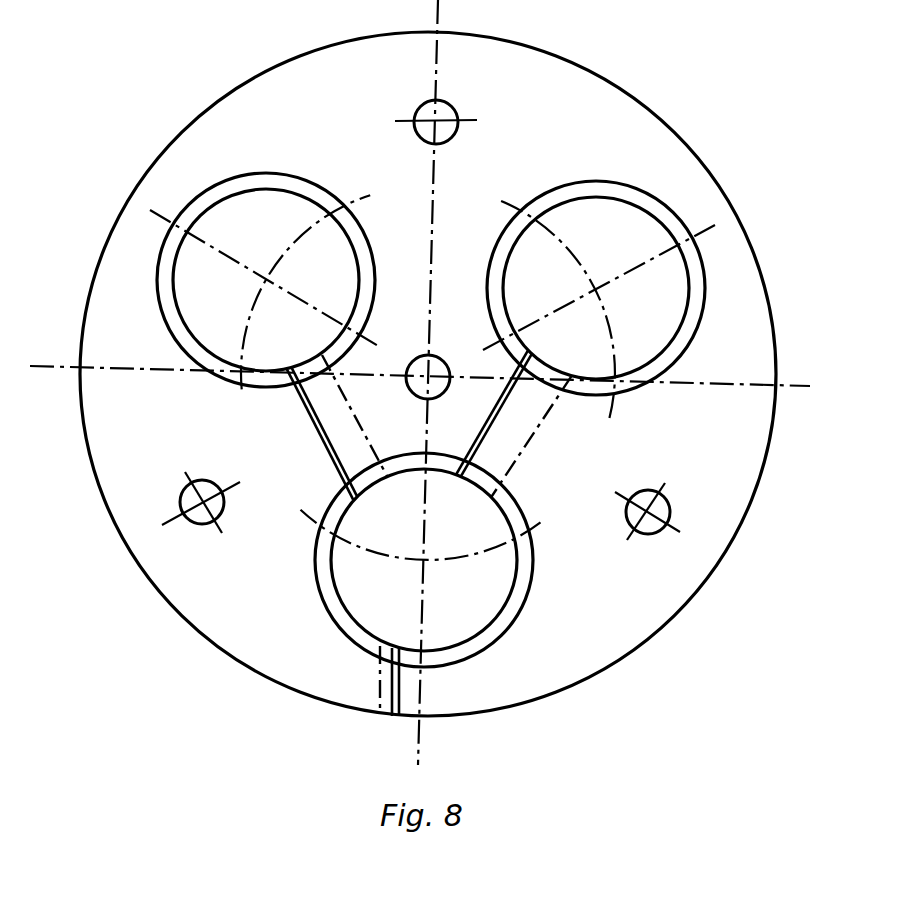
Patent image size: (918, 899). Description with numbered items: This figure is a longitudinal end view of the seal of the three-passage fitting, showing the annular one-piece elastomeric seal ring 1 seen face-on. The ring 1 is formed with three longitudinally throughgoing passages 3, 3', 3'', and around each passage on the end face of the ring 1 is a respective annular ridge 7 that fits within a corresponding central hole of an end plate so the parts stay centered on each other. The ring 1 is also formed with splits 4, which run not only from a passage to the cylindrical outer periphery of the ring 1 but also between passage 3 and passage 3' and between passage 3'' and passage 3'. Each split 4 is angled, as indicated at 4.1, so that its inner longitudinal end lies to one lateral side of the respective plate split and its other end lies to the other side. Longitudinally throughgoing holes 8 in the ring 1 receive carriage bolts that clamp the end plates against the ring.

The seal ring 1 is at (768, 284).
The passage 3 is at (266, 280).
The passage 3' is at (424, 560).
The passage 3'' is at (596, 288).
The split 4 is at (310, 423).
The angled portion of split 4.1 is at (349, 448).
The annular ridge 7 is at (300, 178).
The hole 8 is at (452, 112).